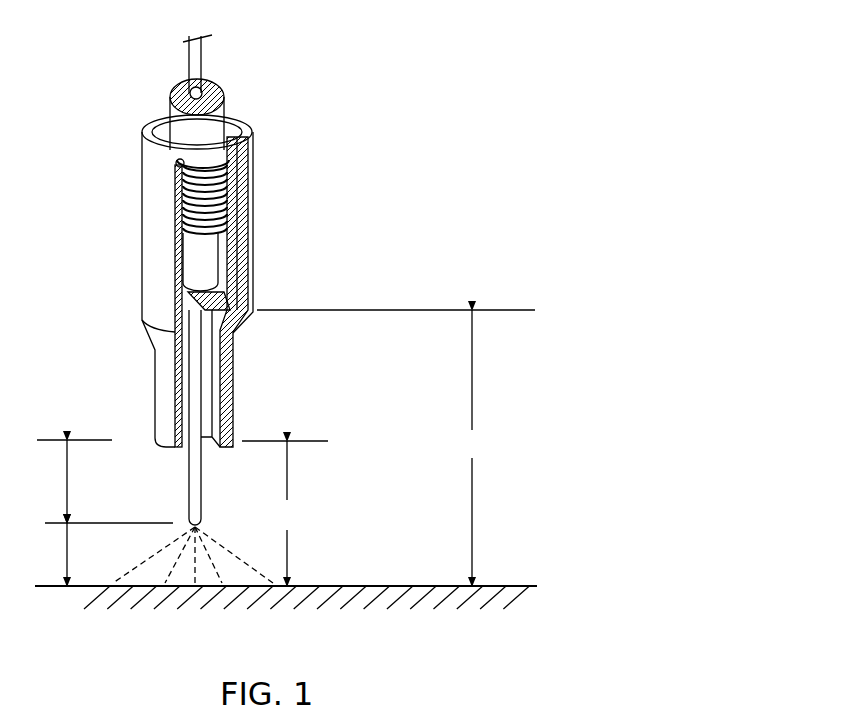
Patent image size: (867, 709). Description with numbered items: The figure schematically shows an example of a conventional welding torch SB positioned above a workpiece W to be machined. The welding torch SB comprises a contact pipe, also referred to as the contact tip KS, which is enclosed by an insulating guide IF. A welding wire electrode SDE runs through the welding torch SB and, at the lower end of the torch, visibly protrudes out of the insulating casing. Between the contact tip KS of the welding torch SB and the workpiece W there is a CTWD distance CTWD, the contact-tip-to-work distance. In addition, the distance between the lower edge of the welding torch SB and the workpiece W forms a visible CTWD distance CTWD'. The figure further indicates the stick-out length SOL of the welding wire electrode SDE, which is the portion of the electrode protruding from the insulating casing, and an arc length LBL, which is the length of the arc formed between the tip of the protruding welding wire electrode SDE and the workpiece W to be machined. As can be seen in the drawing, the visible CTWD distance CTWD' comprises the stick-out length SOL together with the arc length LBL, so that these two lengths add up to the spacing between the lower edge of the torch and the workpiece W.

The welding torch SB is at (492, 103).
The welding wire electrode SDE is at (204, 52).
The insulating guide IF is at (266, 157).
The contact tip KS is at (216, 249).
The workpiece W is at (212, 598).
The CTWD distance CTWD is at (396, 448).
The visible CTWD distance CTWD' is at (285, 513).
The stick-out length SOL is at (74, 481).
The arc length LBL is at (109, 554).